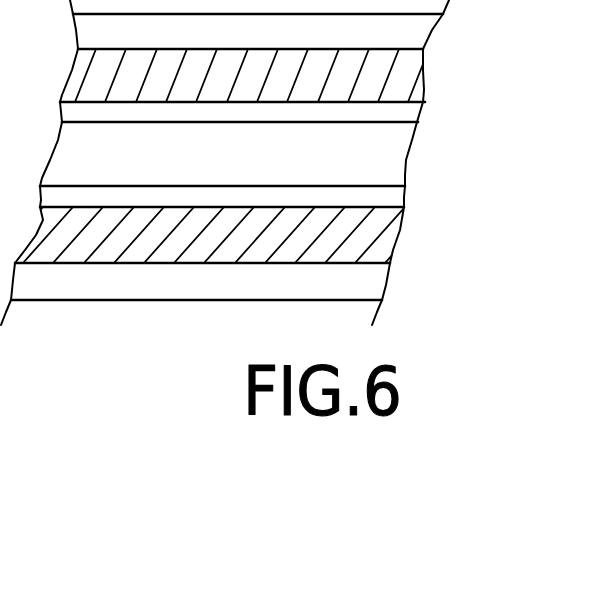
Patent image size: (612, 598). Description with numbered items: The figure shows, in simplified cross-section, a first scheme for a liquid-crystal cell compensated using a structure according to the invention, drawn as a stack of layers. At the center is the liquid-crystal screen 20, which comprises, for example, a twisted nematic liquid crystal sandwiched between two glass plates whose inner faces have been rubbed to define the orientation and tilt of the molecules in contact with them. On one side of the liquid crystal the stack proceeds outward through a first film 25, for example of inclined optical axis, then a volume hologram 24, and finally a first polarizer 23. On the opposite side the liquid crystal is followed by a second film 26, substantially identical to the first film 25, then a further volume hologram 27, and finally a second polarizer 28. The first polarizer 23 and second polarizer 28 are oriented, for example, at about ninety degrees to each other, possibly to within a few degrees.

The liquid-crystal screen 20 is at (389, 165).
The first polarizer 23 is at (408, 33).
The volume hologram 24 is at (405, 80).
The first film 25 is at (400, 114).
The second film 26 is at (390, 200).
The volume hologram 27 is at (385, 240).
The second polarizer 28 is at (370, 290).